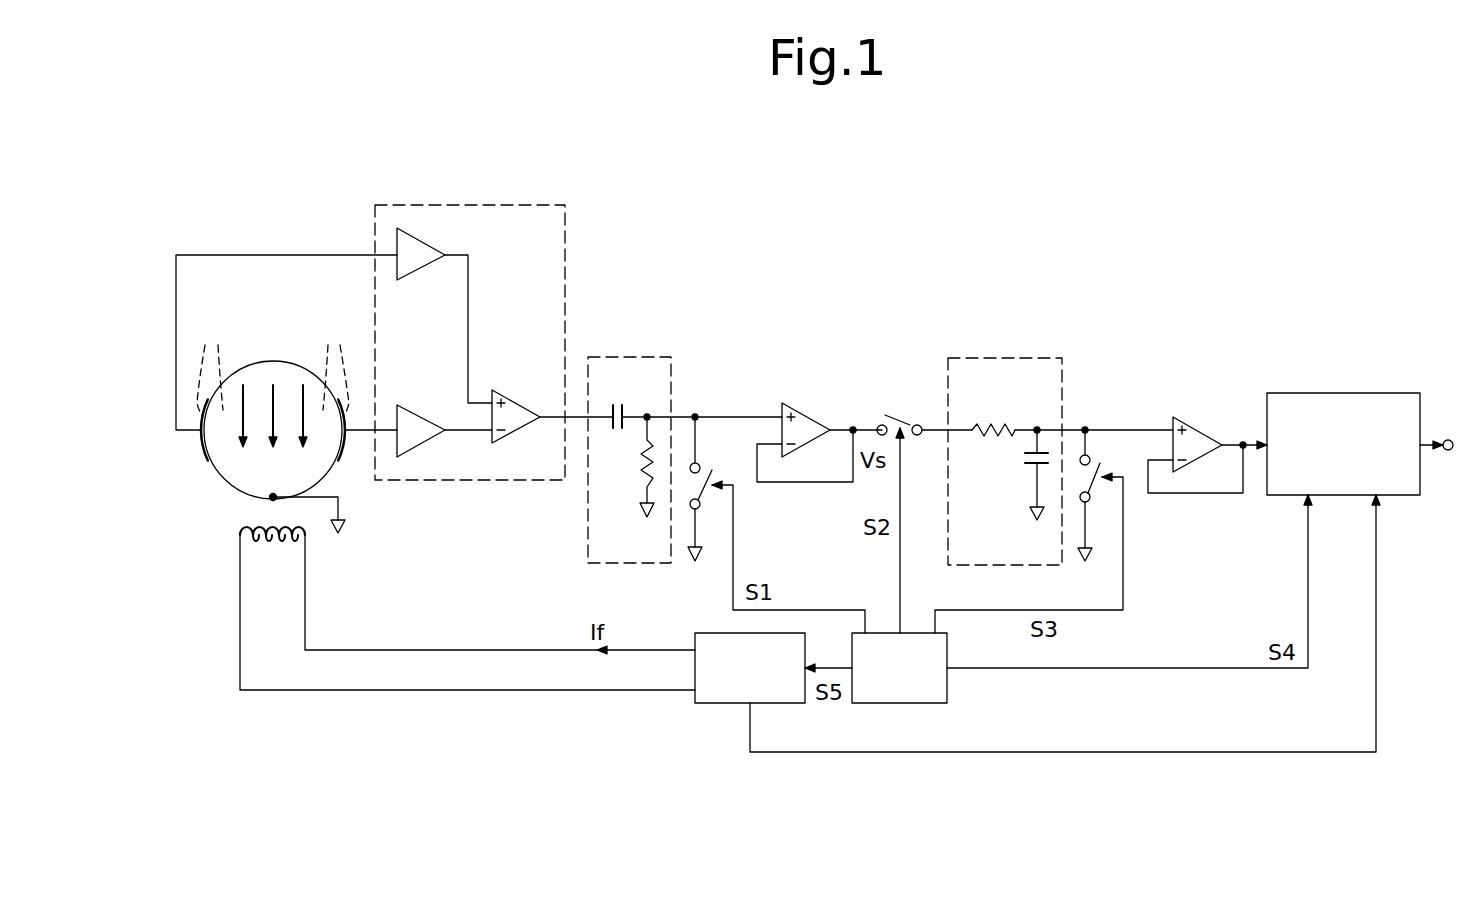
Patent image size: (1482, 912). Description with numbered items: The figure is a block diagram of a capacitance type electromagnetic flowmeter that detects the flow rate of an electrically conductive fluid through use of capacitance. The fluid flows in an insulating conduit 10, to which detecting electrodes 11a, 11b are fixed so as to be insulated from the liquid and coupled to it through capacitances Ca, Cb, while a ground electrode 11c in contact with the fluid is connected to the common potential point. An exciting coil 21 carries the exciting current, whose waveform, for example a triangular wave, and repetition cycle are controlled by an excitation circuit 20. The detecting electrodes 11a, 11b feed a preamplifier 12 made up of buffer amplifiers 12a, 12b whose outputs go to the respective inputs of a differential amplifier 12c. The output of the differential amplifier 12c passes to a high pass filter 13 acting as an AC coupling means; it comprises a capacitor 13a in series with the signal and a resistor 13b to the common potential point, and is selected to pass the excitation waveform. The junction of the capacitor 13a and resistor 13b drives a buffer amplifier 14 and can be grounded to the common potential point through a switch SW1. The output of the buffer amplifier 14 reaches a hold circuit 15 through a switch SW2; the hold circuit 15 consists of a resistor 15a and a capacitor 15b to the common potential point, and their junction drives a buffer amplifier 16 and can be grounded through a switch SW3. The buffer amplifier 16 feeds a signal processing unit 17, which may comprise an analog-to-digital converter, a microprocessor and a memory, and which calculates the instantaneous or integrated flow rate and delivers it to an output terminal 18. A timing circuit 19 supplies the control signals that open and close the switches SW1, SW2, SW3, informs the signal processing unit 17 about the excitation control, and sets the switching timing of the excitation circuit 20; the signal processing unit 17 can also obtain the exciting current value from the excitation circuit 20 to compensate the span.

The insulating conduit 10 is at (274, 362).
The detecting electrode 11a is at (202, 447).
The detecting electrode 11b is at (344, 452).
The ground electrode 11c is at (272, 498).
The preamplifier 12 is at (405, 205).
The buffer amplifier 12a is at (434, 250).
The buffer amplifier 12b is at (423, 450).
The differential amplifier 12c is at (519, 396).
The high pass filter 13 is at (620, 356).
The capacitor 13a is at (616, 404).
The resistor 13b is at (644, 467).
The buffer amplifier 14 is at (805, 405).
The hold circuit 15 is at (975, 356).
The resistor 15a is at (992, 424).
The capacitor 15b is at (1022, 458).
The buffer amplifier 16 is at (1201, 417).
The signal processing unit 17 is at (1335, 393).
The output terminal 18 is at (1449, 440).
The timing circuit 19 is at (912, 703).
The excitation circuit 20 is at (770, 703).
The exciting coil 21 is at (279, 543).
The switch SW1 is at (710, 507).
The switch SW2 is at (898, 414).
The switch SW3 is at (1120, 513).
The capacitance Ca is at (209, 369).
The capacitance Cb is at (334, 369).